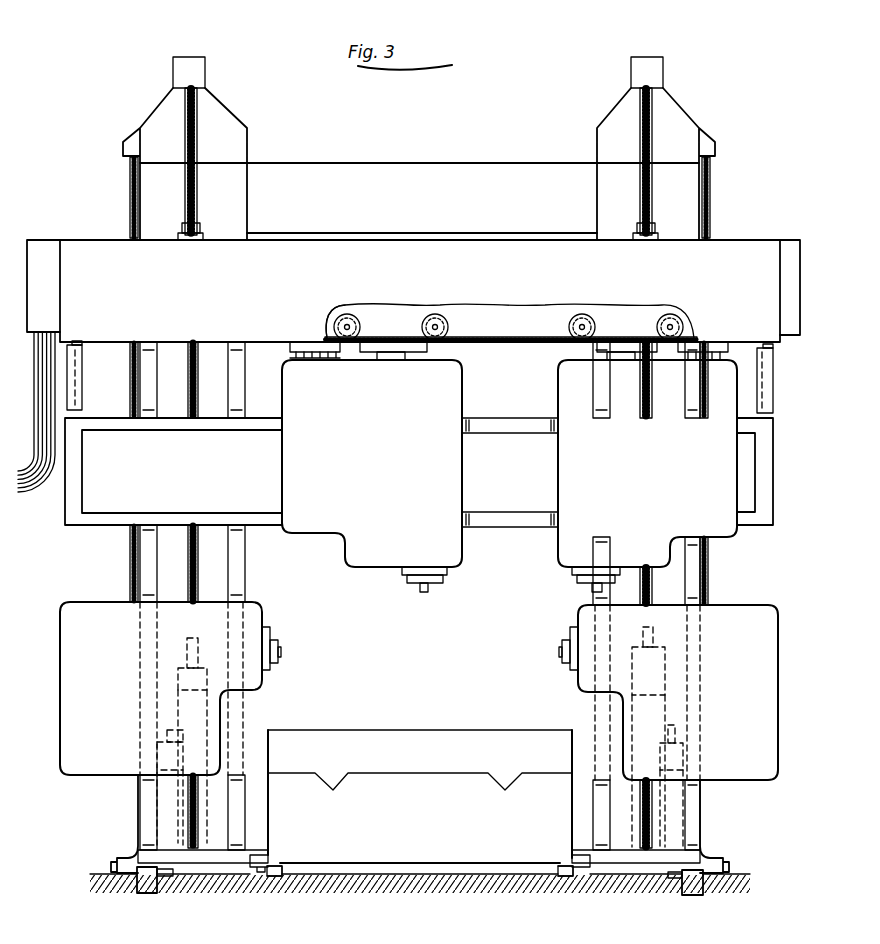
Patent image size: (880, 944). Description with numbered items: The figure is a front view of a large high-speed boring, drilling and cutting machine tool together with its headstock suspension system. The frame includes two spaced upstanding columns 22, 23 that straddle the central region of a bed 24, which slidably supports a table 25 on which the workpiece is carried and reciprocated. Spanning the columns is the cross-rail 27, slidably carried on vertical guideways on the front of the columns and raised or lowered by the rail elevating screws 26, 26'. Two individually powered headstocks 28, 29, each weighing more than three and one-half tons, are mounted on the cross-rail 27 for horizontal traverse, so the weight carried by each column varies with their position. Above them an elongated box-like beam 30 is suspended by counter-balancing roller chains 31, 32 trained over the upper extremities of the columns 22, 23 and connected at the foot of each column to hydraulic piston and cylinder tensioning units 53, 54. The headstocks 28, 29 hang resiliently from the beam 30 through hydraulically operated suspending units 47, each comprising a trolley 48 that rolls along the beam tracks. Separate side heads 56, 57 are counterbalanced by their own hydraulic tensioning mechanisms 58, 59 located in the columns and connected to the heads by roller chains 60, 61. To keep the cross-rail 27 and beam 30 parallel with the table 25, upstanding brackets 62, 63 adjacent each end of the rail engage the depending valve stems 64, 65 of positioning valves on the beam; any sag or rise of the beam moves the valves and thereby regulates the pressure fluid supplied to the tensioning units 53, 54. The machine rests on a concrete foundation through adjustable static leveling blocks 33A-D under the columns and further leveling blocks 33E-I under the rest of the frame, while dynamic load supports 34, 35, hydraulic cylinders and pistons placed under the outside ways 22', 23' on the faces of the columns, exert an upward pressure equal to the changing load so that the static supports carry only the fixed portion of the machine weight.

The column 22 is at (162, 596).
The outside way 22' is at (114, 586).
The column 23 is at (681, 579).
The outside way 23' is at (724, 596).
The bed 24 is at (436, 834).
The table 25 is at (493, 739).
The rail elevating screw 26 is at (231, 595).
The rail elevating screw 26' is at (696, 595).
The cross-rail 27 is at (523, 486).
The headstock 28 is at (377, 484).
The headstock 29 is at (644, 479).
The beam 30 is at (523, 288).
The counter-balancing chain 31 is at (198, 128).
The counter-balancing chain 32 is at (652, 128).
The leveling blocks 33A-D is at (111, 870).
The leveling blocks 33E-I is at (287, 859).
The dynamic load support 34 is at (133, 889).
The dynamic load support 35 is at (705, 893).
The suspending unit 47 is at (408, 356).
The trolley 48 is at (449, 323).
The tensioning unit 53 is at (212, 679).
The tensioning unit 54 is at (673, 682).
The side head 56 is at (109, 689).
The side head 57 is at (762, 704).
The tensioning mechanism 58 is at (326, 322).
The tensioning mechanism 59 is at (501, 342).
The roller chain 60 is at (130, 562).
The roller chain 61 is at (708, 565).
The upstanding bracket 62 is at (82, 380).
The upstanding bracket 63 is at (773, 392).
The valve stem 64 is at (82, 344).
The valve stem 65 is at (773, 347).